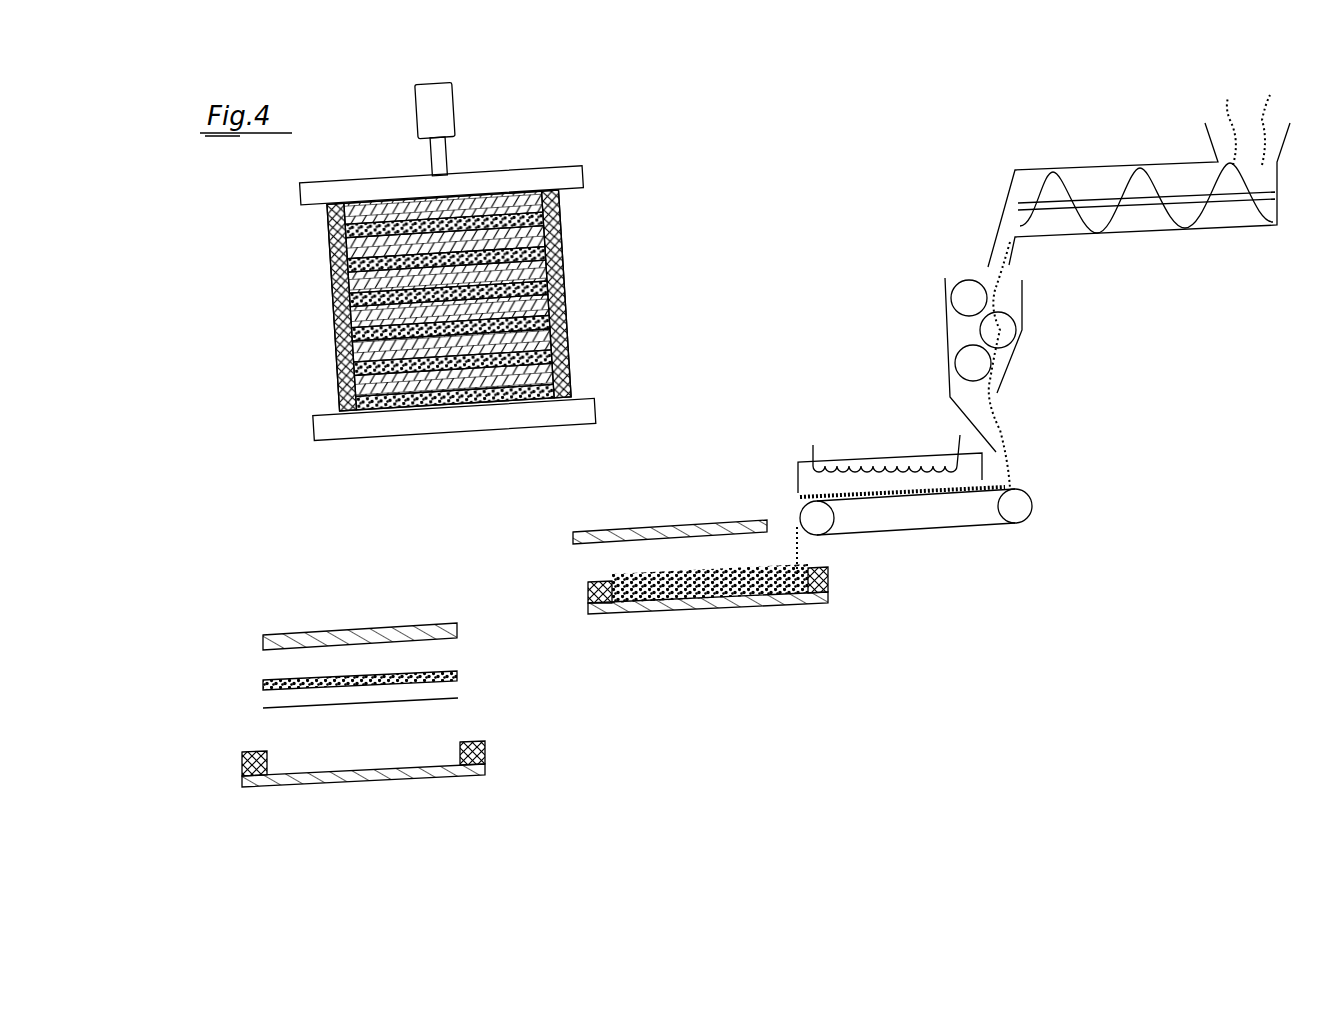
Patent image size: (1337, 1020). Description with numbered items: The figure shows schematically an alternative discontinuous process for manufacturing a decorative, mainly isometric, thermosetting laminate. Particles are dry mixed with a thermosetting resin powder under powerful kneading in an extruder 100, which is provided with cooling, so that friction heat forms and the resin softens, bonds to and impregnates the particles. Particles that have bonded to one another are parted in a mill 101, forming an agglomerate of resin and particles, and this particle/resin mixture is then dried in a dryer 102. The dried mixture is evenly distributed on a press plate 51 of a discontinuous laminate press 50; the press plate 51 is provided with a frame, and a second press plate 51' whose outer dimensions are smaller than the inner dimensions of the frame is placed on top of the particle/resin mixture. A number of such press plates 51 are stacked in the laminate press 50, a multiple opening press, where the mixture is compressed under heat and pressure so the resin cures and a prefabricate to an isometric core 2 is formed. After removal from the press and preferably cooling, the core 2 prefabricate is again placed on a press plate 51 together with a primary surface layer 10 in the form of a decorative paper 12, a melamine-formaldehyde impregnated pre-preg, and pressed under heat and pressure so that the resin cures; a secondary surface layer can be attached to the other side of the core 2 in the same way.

The laminate press 50 is at (573, 172).
The press plate 51 is at (592, 500).
The second press plate 51' is at (487, 428).
The isometric core 2 is at (459, 675).
The decorative paper 12 is at (458, 698).
The primary surface layer 10 is at (473, 703).
The extruder 100 is at (1225, 222).
The mill 101 is at (1022, 333).
The dryer 102 is at (1025, 497).